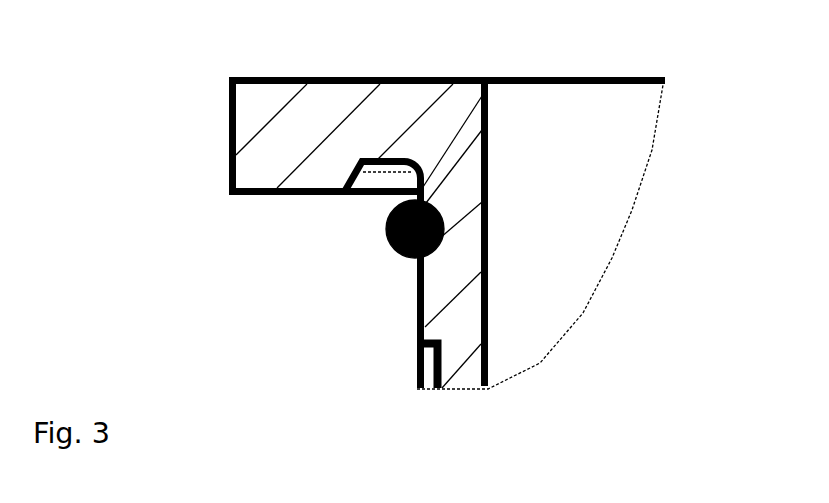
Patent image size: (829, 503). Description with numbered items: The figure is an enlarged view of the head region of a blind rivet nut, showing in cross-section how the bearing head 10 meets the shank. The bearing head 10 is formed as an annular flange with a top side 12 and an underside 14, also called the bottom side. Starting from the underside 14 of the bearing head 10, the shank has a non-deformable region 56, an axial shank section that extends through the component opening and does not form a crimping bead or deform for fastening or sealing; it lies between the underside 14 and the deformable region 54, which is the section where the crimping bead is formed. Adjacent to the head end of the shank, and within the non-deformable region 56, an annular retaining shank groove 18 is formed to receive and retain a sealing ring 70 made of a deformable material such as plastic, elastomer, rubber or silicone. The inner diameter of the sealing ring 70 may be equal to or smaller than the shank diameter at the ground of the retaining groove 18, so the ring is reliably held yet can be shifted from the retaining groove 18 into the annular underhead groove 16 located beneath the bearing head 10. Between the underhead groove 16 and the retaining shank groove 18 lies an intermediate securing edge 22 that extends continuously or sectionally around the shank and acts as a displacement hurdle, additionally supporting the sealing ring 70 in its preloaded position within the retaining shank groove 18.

The bearing head 10 is at (229, 128).
The top side 12 is at (343, 77).
The underside 14 is at (282, 195).
The annular underhead groove 16 is at (363, 172).
The annular retaining shank groove 18 is at (437, 211).
The intermediate securing edge 22 is at (488, 78).
The deformable region 54 is at (457, 366).
The non-deformable region 56 is at (462, 273).
The sealing ring 70 is at (402, 257).